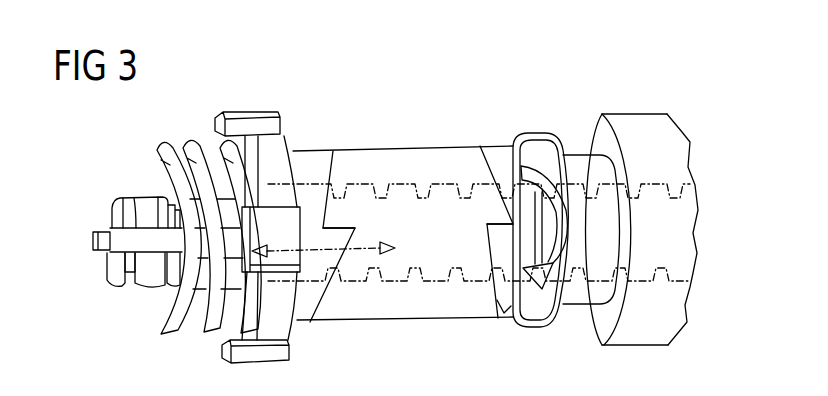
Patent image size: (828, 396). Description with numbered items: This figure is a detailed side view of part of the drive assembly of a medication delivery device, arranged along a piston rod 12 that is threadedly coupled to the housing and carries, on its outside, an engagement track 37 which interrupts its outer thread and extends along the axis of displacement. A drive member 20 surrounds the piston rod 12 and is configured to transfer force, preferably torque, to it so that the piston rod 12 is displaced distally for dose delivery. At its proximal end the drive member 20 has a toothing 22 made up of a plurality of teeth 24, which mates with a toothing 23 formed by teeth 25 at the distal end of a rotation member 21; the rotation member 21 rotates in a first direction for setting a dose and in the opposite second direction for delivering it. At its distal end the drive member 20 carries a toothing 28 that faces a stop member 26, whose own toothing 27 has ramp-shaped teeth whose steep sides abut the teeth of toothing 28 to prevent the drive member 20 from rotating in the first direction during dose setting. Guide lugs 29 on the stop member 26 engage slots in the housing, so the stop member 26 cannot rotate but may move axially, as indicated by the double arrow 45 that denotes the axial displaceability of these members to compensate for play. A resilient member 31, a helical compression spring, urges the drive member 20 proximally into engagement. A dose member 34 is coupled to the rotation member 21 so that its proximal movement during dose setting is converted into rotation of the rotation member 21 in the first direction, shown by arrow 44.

The piston rod 12 is at (157, 280).
The drive member 20 is at (413, 155).
The rotation member 21 is at (503, 157).
The toothing 22 is at (480, 155).
The toothing 23 is at (503, 314).
The teeth 24 is at (510, 216).
The teeth 25 is at (566, 228).
The stop member 26 is at (308, 158).
The toothing 27 is at (347, 237).
The toothing 28 is at (328, 227).
The guide lug 29 is at (250, 118).
The resilient member 31 is at (170, 167).
The dose member 34 is at (642, 128).
The engagement track 37 is at (143, 242).
The arrow 44 is at (542, 322).
The double arrow 45 is at (373, 270).